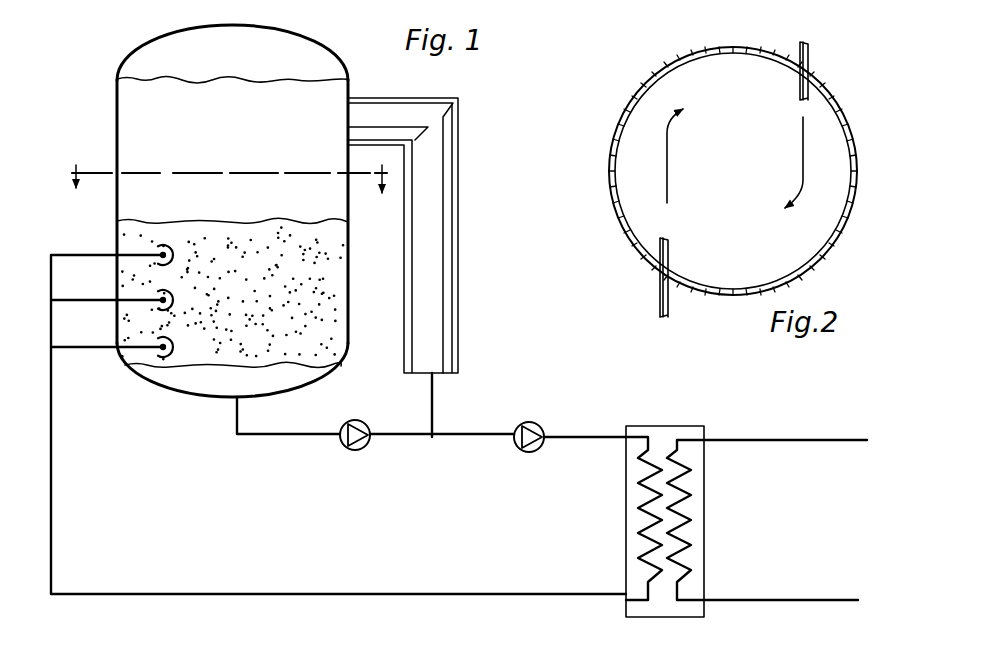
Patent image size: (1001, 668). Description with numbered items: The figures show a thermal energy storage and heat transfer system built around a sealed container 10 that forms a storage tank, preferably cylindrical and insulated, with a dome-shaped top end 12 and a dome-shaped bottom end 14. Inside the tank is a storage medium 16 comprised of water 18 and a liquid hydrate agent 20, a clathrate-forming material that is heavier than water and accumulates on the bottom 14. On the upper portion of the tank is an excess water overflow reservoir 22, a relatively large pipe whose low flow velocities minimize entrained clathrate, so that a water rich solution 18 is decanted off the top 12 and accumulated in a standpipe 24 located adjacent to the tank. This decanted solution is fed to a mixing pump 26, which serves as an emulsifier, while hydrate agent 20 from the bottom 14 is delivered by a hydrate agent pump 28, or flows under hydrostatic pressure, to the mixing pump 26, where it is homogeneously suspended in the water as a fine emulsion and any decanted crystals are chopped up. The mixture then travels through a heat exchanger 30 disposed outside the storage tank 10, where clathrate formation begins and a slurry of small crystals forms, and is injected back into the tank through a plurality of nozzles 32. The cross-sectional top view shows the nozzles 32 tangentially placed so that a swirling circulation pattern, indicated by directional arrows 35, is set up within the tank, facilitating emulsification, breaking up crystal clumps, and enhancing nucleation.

In FIG. 1, the sealed container 10 is at (211, 208).
In FIG. 2, the sealed container 10 is at (860, 128).
In FIG. 1, the dome-shaped top end 12 is at (177, 31).
In FIG. 1, the dome-shaped bottom end 14 is at (215, 400).
In FIG. 1, the storage medium 16 is at (328, 287).
In FIG. 1, the water 18 is at (135, 120).
In FIG. 1, the liquid hydrate agent 20 is at (293, 375).
In FIG. 1, the excess water overflow reservoir 22 is at (396, 100).
In FIG. 1, the standpipe 24 is at (458, 215).
In FIG. 1, the mixing pump 26 is at (527, 421).
In FIG. 1, the hydrate agent pump 28 is at (360, 450).
In FIG. 1, the heat exchanger 30 is at (708, 400).
In FIG. 1, the nozzles 32 is at (190, 243).
In FIG. 2, the nozzles 32 is at (811, 50).
In FIG. 2, the directional arrows 35 is at (803, 168).